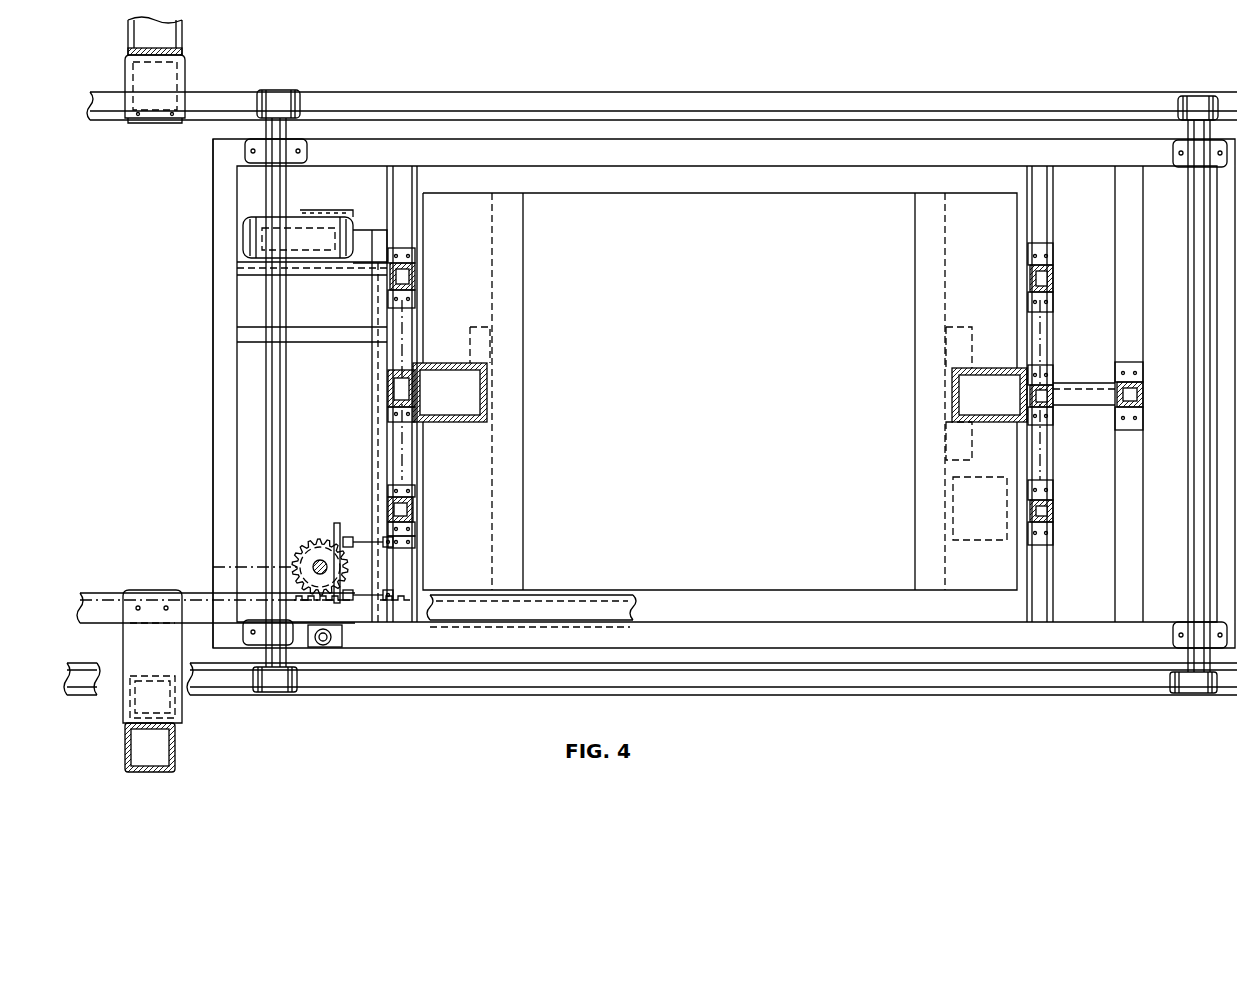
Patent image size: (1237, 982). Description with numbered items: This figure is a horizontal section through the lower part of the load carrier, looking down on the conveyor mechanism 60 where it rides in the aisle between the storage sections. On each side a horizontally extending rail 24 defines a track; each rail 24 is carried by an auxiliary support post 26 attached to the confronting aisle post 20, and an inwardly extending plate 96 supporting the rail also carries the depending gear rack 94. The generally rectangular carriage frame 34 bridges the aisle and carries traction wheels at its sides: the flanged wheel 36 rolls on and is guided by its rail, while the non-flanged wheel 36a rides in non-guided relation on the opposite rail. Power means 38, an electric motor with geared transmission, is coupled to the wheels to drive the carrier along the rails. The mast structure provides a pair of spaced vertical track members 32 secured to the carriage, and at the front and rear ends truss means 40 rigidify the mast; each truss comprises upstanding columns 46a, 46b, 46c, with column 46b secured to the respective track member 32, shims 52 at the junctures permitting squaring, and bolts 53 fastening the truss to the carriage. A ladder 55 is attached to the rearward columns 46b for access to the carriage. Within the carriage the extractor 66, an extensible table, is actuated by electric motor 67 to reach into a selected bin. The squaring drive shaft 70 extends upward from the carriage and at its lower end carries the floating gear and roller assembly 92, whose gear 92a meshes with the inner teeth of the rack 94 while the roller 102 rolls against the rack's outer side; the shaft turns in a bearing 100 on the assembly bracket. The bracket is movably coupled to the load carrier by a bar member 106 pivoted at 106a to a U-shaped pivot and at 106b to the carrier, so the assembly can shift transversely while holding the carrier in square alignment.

The aisle post 20 is at (186, 42).
The rail 24 is at (895, 104).
The auxiliary support post 26 is at (185, 80).
The vertically extending track member 32 is at (487, 391).
The carriage frame 34 is at (995, 150).
The wheel 36 is at (298, 690).
The non-flanged wheel 36a is at (302, 94).
The power means 38 is at (342, 218).
The truss means 40 is at (400, 262).
The upstanding column 46a is at (414, 508).
The upstanding column 46b is at (400, 380).
The upstanding column 46c is at (414, 270).
The shim 52 is at (402, 526).
The bolt 53 is at (404, 306).
The ladder 55 is at (1083, 374).
The conveyor mechanism 60 is at (213, 420).
The extractor 66 is at (730, 372).
The electric motor 67 is at (950, 510).
The drive shaft 70 is at (332, 550).
The gear and roller assembly 92 is at (338, 534).
The gear 92a is at (314, 560).
The gear rack 94 is at (107, 593).
The inwardly extending plate 96 is at (130, 638).
The bearing 100 is at (265, 566).
The roller 102 is at (330, 645).
The bar member 106 is at (356, 598).
The pivot 106a is at (349, 536).
The pivot 106b is at (436, 632).